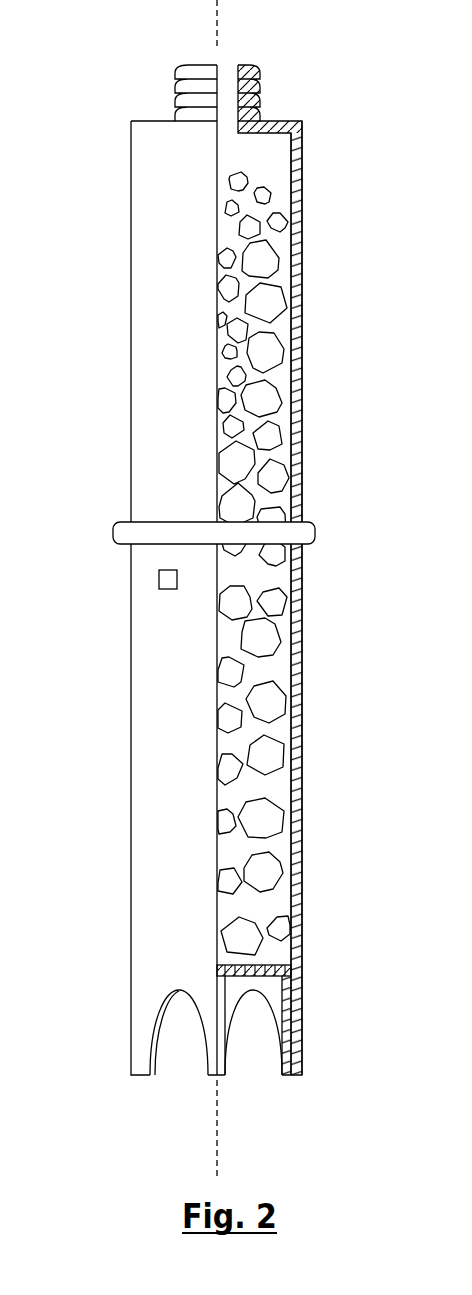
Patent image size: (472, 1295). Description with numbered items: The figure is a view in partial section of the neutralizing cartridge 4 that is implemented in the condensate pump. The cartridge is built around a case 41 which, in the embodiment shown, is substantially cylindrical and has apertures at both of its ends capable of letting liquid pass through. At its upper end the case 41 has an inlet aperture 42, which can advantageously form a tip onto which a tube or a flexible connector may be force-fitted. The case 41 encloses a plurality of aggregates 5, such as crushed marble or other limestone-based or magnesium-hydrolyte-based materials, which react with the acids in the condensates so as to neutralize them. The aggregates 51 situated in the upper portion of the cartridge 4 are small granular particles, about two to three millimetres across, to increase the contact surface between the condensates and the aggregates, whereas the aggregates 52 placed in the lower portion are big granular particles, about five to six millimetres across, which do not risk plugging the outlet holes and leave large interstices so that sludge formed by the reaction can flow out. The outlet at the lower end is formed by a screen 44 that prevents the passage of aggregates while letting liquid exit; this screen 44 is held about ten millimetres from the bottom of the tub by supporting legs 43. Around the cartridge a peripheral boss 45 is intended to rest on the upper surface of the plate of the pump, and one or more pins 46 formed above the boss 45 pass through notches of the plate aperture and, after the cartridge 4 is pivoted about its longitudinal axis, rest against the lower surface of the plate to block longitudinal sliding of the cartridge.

The neutralizing cartridge 4 is at (158, 280).
The case 41 is at (295, 259).
The inlet aperture 42 is at (223, 78).
The supporting legs 43 is at (142, 1045).
The screen 44 is at (302, 981).
The peripheral boss 45 is at (147, 537).
The pins 46 is at (168, 585).
The aggregates 5 is at (284, 644).
The aggregates situated in an upper portion 51 is at (287, 439).
The aggregates placed in a lower portion 52 is at (272, 762).